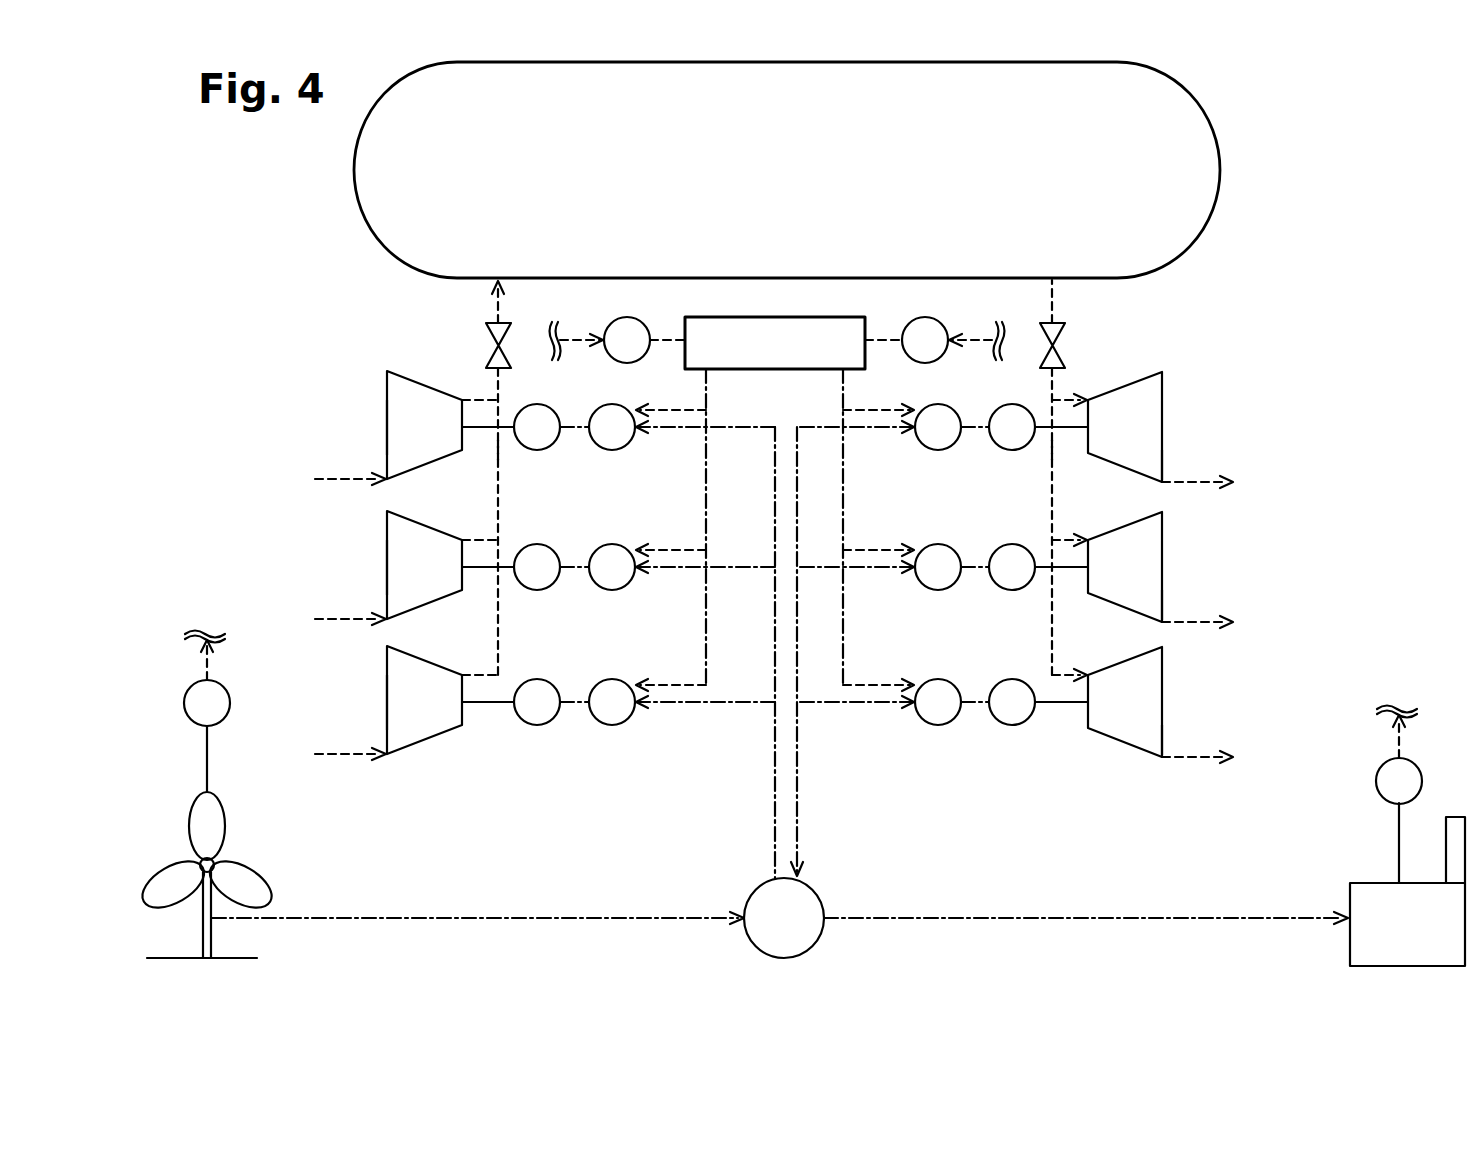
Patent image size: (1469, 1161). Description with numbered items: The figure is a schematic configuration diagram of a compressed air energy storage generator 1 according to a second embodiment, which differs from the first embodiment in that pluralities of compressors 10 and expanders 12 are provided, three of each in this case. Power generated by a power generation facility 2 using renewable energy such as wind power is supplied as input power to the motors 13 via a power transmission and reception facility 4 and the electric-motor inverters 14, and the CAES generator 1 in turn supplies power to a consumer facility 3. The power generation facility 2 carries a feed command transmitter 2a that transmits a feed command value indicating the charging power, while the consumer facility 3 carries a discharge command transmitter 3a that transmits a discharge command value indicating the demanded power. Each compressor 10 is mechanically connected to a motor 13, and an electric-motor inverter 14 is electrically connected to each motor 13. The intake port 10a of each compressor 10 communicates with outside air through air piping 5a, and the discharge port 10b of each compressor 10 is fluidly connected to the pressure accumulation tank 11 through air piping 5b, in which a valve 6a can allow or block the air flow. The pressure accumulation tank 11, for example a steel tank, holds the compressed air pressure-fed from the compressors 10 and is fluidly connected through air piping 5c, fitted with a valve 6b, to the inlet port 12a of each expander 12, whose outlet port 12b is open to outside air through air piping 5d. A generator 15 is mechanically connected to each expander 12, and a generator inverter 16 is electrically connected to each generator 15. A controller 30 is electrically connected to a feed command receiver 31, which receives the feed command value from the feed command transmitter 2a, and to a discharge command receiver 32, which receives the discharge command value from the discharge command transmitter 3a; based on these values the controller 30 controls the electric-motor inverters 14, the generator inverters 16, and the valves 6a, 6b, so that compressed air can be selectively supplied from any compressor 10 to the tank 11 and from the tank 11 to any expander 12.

The compressed air energy storage generator 1 is at (240, 318).
The power generation facility 2 is at (188, 820).
The feed command transmitter 2a is at (184, 700).
The consumer facility 3 is at (1350, 883).
The discharge command transmitter 3a is at (1377, 779).
The power transmission and reception facility 4 is at (748, 898).
The air piping 5a is at (383, 477).
The air piping 5b is at (500, 513).
The air piping 5c is at (1052, 513).
The air piping 5d is at (1203, 478).
The valve 6a is at (486, 332).
The valve 6b is at (1064, 332).
The compressor 10 is at (387, 372).
The intake port 10a is at (387, 467).
The discharge port 10b is at (462, 398).
The pressure accumulation tank 11 is at (1210, 218).
The expander 12 is at (1162, 375).
The inlet port 12a is at (1088, 398).
The outlet port 12b is at (1162, 478).
The motor 13 is at (540, 450).
The electric-motor inverter 14 is at (627, 450).
The generator 15 is at (1003, 450).
The generator inverter 16 is at (943, 450).
The controller 30 is at (748, 370).
The feed command receiver 31 is at (632, 362).
The discharge command receiver 32 is at (930, 362).